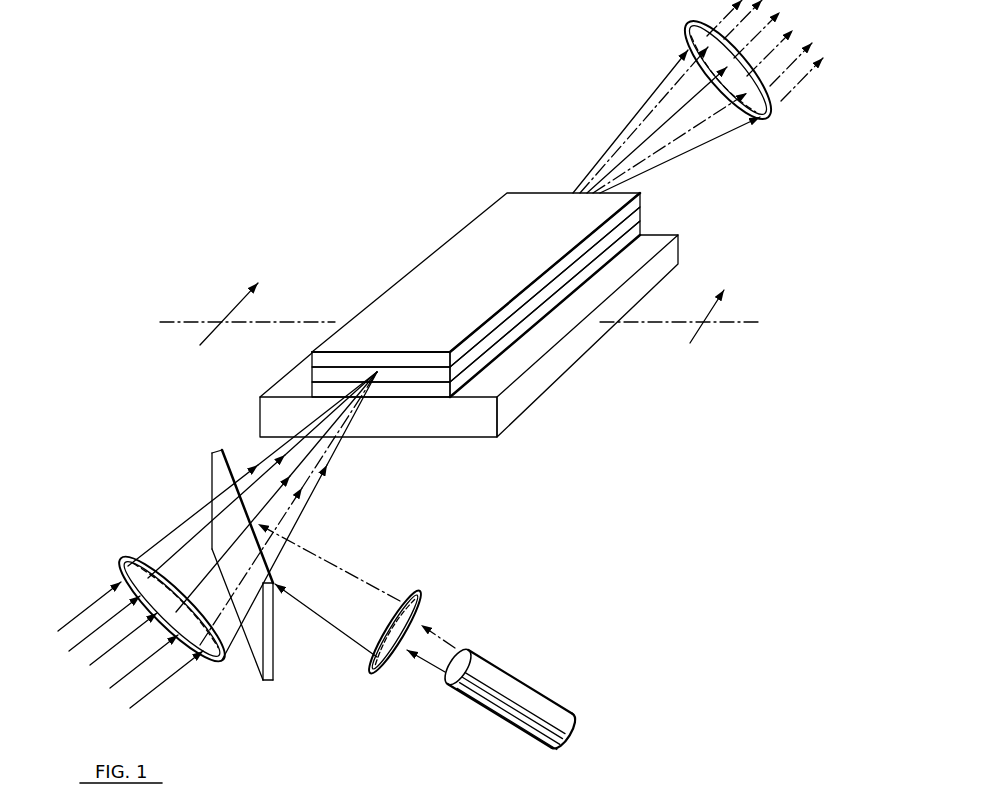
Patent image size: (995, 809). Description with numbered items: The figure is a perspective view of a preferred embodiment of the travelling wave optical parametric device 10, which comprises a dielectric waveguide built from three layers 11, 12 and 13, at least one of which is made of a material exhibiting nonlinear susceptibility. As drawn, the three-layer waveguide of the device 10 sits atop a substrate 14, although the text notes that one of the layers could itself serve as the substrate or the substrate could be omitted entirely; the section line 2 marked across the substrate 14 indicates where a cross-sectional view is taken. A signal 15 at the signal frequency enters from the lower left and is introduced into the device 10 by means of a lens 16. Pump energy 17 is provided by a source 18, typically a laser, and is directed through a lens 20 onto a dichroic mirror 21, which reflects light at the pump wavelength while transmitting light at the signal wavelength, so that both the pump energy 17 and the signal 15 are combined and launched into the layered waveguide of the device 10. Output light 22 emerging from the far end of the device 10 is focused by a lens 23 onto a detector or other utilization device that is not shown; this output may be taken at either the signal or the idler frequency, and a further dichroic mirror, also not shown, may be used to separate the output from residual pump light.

The section line 2- 2 is at (203, 356).
The optical parametric device 10 is at (431, 246).
The waveguide layer 11 is at (607, 257).
The waveguide layer 12 is at (633, 218).
The waveguide layer 13 is at (625, 212).
The substrate 14 is at (553, 358).
The signal 15 is at (155, 657).
The lens 16 is at (124, 558).
The pump energy 17 is at (413, 660).
The source 18 is at (547, 708).
The lens 20 is at (415, 608).
The dichroic mirror 21 is at (218, 483).
The output light 22 is at (790, 90).
The lens 23 is at (762, 118).